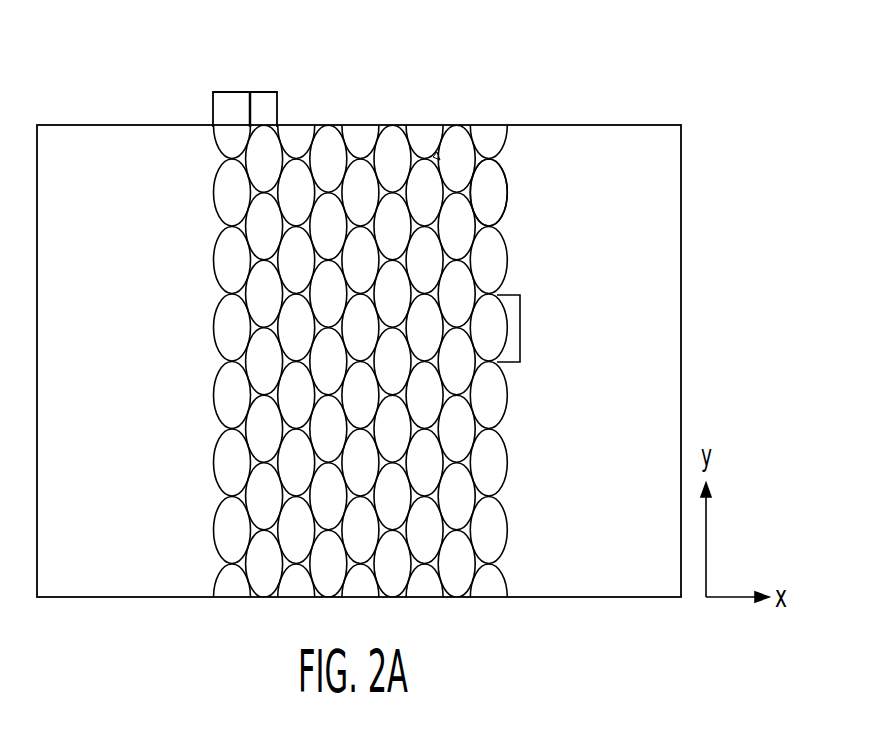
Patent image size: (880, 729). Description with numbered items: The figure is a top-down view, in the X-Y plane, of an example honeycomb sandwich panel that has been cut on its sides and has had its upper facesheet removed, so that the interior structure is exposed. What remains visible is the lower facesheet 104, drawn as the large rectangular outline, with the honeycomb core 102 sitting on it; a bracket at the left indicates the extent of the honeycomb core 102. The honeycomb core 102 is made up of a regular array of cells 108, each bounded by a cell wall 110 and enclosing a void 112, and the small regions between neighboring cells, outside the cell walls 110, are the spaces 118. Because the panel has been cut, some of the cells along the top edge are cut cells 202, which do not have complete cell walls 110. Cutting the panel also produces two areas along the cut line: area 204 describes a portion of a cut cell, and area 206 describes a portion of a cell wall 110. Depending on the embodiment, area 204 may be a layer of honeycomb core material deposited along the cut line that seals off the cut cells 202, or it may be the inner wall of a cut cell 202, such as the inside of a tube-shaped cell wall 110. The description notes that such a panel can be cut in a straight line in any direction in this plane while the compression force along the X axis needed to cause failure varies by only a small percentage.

The honeycomb core 102 is at (208, 128).
The lower facesheet 104 is at (660, 303).
The cells 108 is at (520, 328).
The cell walls 110 is at (506, 190).
The voids 112 is at (488, 184).
The spaces 118 is at (433, 157).
The cut cells 202 is at (421, 137).
The area 204 is at (232, 92).
The area 206 is at (263, 92).